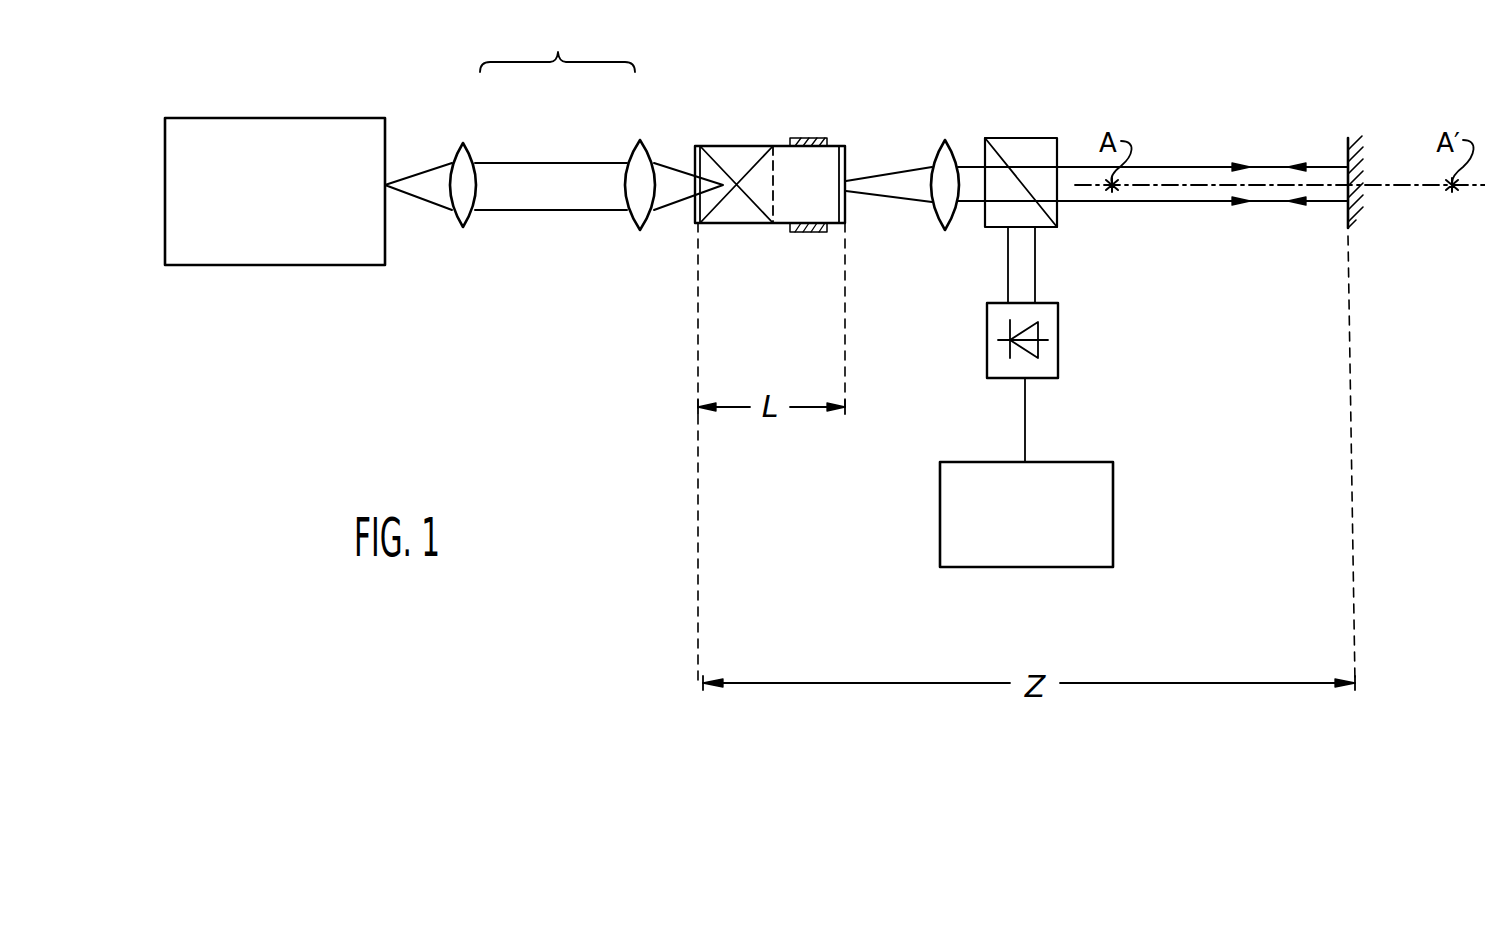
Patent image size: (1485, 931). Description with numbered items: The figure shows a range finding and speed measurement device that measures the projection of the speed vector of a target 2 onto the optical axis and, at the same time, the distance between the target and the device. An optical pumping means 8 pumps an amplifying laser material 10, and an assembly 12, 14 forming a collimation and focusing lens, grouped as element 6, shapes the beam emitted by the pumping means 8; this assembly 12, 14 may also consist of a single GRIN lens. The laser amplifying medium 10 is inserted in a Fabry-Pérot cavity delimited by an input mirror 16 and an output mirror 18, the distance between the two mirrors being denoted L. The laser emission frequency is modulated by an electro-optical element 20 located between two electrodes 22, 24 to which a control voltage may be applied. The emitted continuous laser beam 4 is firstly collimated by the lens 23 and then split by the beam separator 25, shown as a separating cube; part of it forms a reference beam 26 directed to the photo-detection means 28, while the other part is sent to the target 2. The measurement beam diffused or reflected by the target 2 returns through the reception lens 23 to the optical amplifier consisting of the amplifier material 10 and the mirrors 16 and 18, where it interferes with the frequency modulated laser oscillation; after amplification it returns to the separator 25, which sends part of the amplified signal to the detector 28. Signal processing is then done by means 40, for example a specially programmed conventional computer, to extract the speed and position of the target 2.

The target 2 is at (1357, 140).
The continuous laser beam 4 is at (1210, 167).
The lens pair / focusing optics 6 is at (552, 124).
The optical pumping means 8 is at (293, 133).
The amplifying laser material 10 is at (735, 160).
The collimation and focusing lens assembly 12 is at (467, 168).
The collimation and focusing lens assembly 14 is at (640, 160).
The input mirror 16 is at (690, 218).
The output mirror 18 is at (850, 212).
The electro-optical element 20 is at (800, 170).
The electrode 22 is at (830, 138).
The electrode 24 is at (808, 232).
The collimating optical means 23 is at (948, 155).
The beam separator 25 is at (1045, 143).
The reference beam 26 is at (1037, 258).
The photo-detection means 28 is at (1055, 368).
The signal processing means 40 is at (1105, 515).